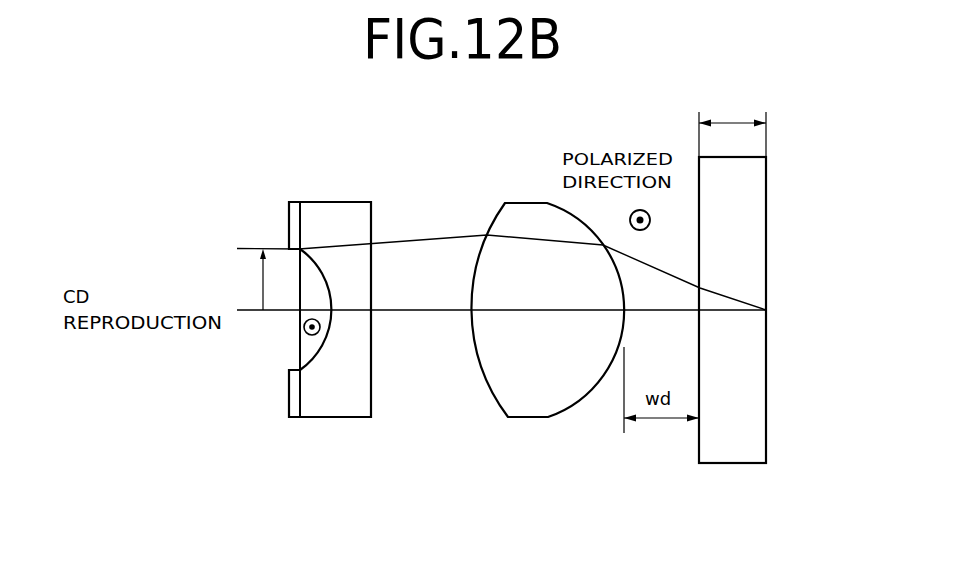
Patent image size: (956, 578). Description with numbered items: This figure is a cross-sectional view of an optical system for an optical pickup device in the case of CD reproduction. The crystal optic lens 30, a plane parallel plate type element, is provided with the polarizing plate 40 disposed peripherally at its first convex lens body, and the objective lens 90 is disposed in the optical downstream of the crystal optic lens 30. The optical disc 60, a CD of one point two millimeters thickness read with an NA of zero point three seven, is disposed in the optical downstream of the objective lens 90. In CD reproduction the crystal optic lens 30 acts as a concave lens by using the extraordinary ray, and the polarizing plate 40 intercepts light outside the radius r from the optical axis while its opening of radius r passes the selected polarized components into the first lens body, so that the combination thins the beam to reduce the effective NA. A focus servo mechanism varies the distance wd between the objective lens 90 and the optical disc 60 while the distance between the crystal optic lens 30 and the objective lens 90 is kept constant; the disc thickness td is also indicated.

The crystal optic lens 30 is at (350, 202).
The polarizing plate 40 is at (295, 202).
The optical disc (CD) 60 is at (770, 193).
The objective lens 90 is at (525, 200).